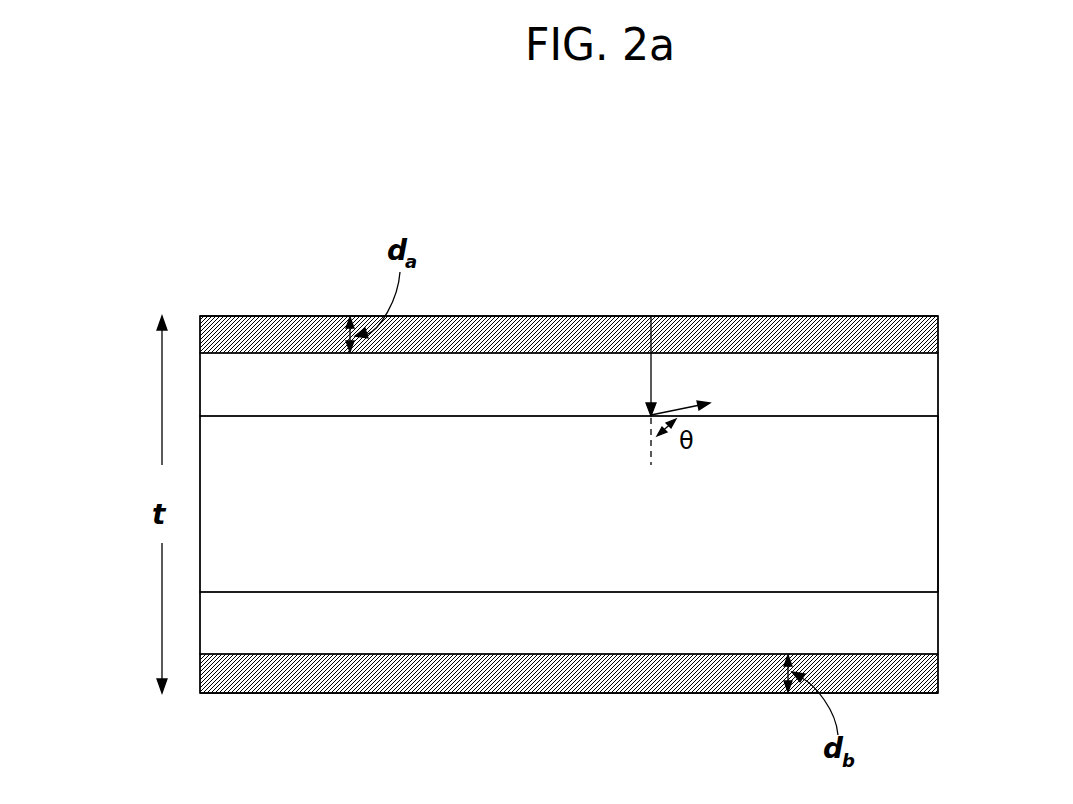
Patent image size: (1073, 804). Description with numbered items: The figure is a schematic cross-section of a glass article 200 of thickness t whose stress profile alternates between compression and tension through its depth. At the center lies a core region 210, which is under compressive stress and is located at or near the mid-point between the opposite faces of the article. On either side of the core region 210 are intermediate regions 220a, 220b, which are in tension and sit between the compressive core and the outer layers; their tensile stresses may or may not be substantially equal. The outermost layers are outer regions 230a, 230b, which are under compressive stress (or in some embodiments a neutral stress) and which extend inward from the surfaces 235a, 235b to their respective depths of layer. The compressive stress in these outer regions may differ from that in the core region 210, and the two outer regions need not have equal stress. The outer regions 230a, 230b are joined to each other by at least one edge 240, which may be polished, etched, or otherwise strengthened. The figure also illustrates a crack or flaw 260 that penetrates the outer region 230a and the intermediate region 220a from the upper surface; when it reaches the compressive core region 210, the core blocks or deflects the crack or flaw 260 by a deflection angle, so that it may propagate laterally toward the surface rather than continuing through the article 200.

The glass article 200 is at (580, 247).
The core region 210 is at (569, 504).
The intermediate region 220a is at (569, 384).
The intermediate region 220b is at (569, 623).
The outer region 230a is at (938, 340).
The outer region 230b is at (938, 667).
The surface 235a is at (850, 316).
The surface 235b is at (437, 693).
The edge 240 is at (938, 497).
The crack or flaw 260 is at (678, 390).